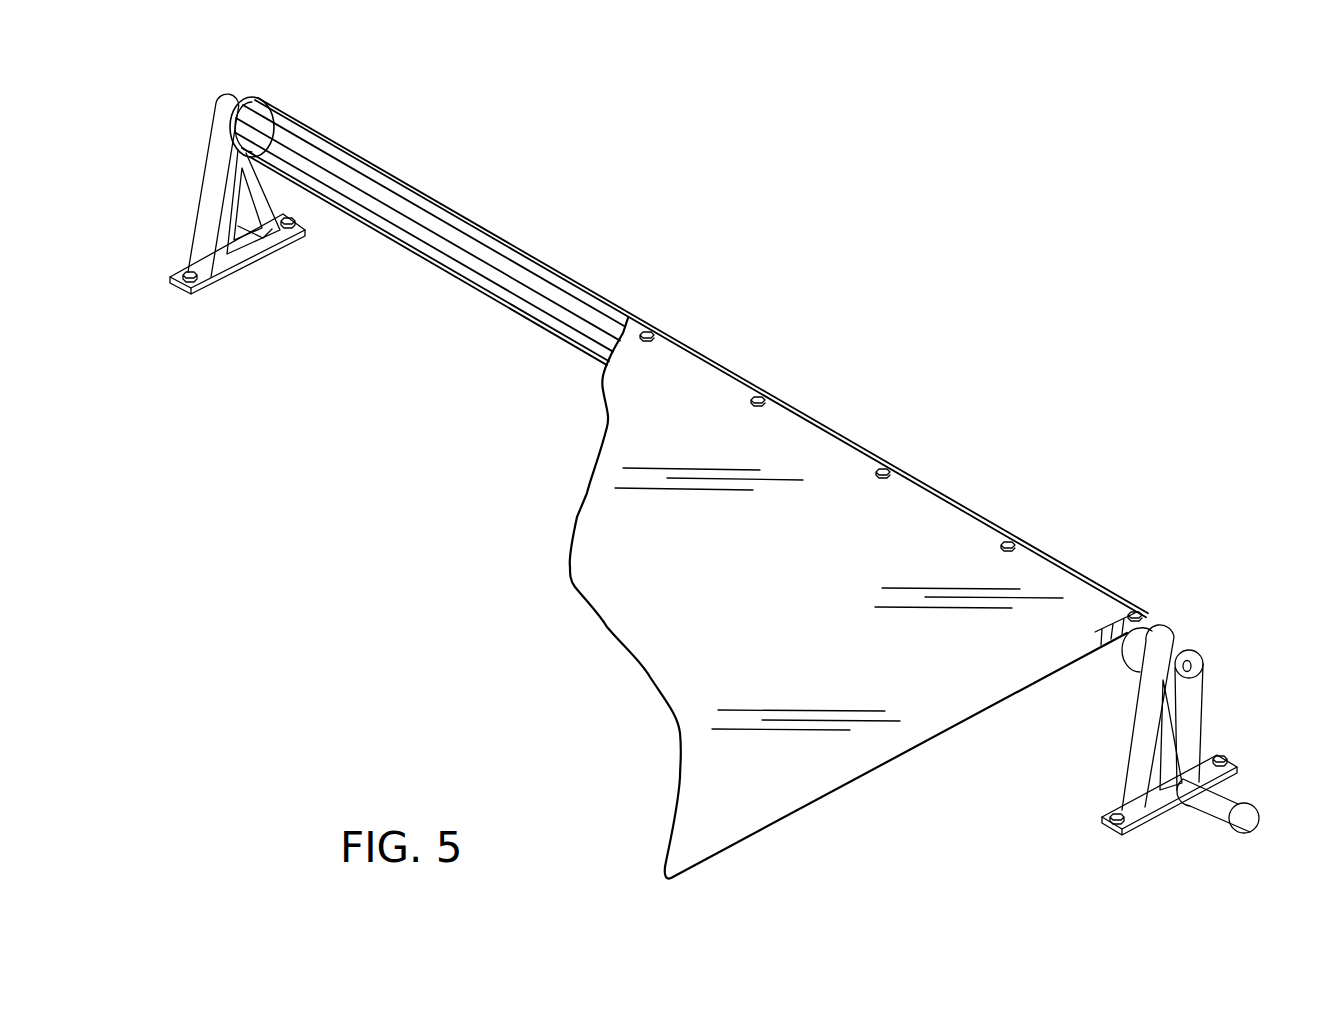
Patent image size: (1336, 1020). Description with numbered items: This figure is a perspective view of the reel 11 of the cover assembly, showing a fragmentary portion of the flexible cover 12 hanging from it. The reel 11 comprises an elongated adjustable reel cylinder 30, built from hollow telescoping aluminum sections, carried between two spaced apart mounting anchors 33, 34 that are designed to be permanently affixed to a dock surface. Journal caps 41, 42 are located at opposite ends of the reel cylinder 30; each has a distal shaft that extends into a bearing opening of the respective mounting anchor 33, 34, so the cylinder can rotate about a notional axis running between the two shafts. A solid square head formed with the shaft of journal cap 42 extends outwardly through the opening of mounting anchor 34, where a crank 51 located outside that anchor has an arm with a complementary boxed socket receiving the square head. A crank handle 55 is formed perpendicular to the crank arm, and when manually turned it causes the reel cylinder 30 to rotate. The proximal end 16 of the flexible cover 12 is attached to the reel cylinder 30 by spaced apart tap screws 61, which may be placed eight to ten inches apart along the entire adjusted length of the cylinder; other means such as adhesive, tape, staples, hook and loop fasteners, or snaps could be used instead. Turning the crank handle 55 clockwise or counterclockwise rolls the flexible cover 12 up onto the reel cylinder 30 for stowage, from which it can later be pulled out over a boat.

The reel 11 is at (1176, 681).
The flexible cover 12 is at (748, 610).
The proximal end 16 is at (678, 360).
The reel cylinder 30 is at (376, 154).
The mounting anchor 33 is at (197, 208).
The mounting anchor 34 is at (1135, 758).
The journal cap 41 is at (258, 98).
The journal cap 42 is at (1161, 624).
The crank 51 is at (1213, 713).
The crank handle 55 is at (1240, 802).
The tap screws 61 is at (760, 396).